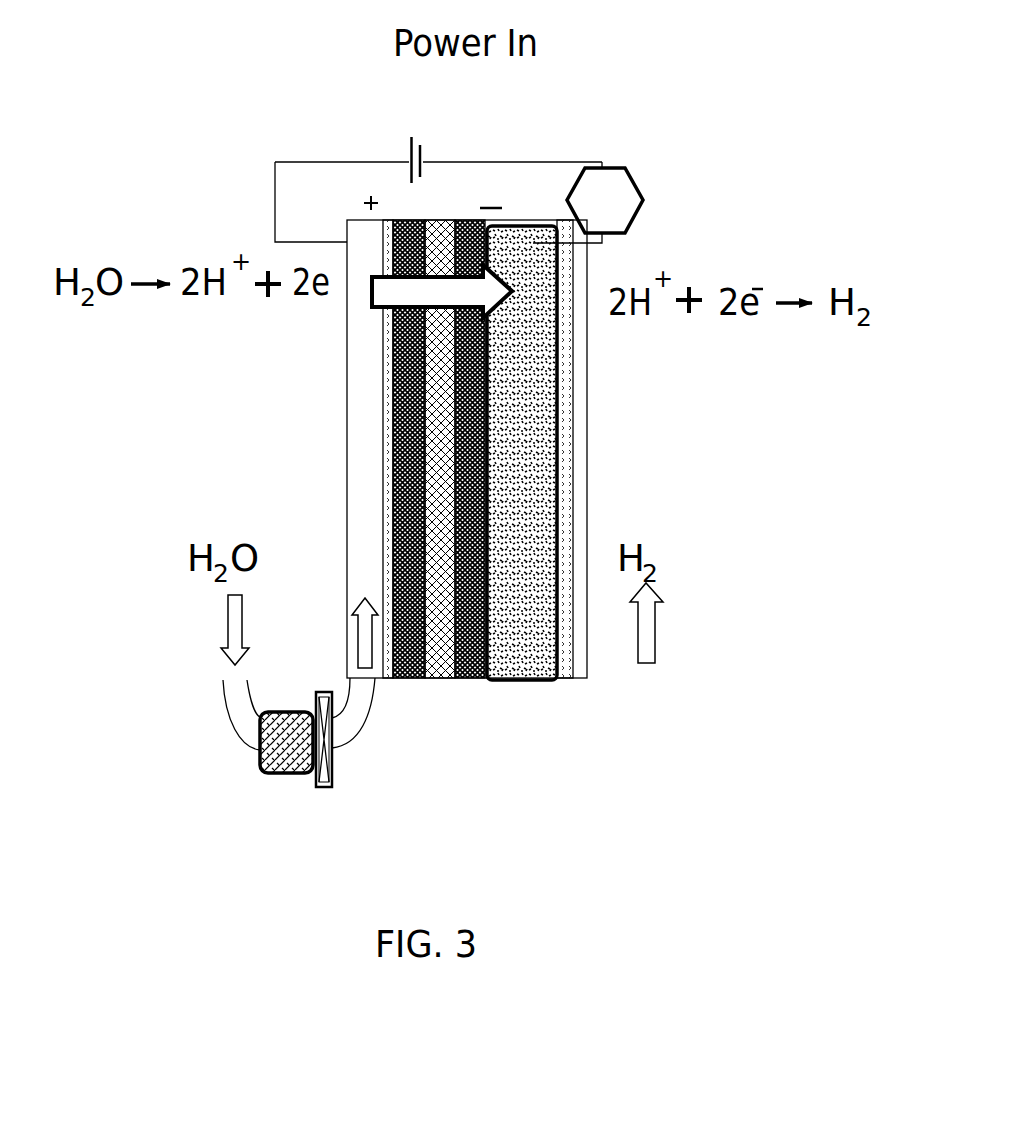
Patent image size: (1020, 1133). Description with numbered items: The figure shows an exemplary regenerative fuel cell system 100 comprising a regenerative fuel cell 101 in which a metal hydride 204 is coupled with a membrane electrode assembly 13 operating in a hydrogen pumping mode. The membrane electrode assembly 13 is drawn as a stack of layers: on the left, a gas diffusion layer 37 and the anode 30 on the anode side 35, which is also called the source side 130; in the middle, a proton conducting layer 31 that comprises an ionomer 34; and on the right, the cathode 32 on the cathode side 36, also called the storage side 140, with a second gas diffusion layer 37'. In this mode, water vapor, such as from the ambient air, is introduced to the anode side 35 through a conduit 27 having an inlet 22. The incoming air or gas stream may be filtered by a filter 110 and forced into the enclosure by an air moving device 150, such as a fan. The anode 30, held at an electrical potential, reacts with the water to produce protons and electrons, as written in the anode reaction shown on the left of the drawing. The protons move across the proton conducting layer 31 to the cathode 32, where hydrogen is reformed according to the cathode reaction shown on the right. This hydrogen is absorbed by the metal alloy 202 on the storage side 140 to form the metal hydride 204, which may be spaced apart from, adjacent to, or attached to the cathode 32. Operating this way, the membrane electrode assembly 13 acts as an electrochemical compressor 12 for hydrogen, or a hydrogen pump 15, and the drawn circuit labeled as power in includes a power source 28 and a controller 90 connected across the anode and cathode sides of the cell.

The regenerative fuel cell system 100 is at (263, 155).
The electrochemical compressor 12 is at (267, 193).
The regenerative fuel cell 101 is at (282, 242).
The hydrogen pump 15 is at (368, 255).
The power source 28 is at (460, 162).
The controller 90 is at (600, 193).
The gas diffusion layer 37' is at (641, 448).
The gas diffusion layer 37 is at (312, 321).
The anode side 35 is at (390, 395).
The anode 30 is at (397, 437).
The source side 130 is at (382, 465).
The membrane electrode assembly 13 is at (387, 513).
The cathode side 36 is at (493, 370).
The storage side 140 is at (530, 399).
The cathode 32 is at (492, 445).
The metal alloy 202 is at (530, 482).
The metal hydride 204 is at (518, 520).
The proton conducting layer 31 is at (417, 678).
The ionomer 34 is at (445, 678).
The inlet 22 is at (355, 683).
The conduit 27 is at (233, 690).
The filter 110 is at (260, 750).
The air moving device 150 is at (313, 783).